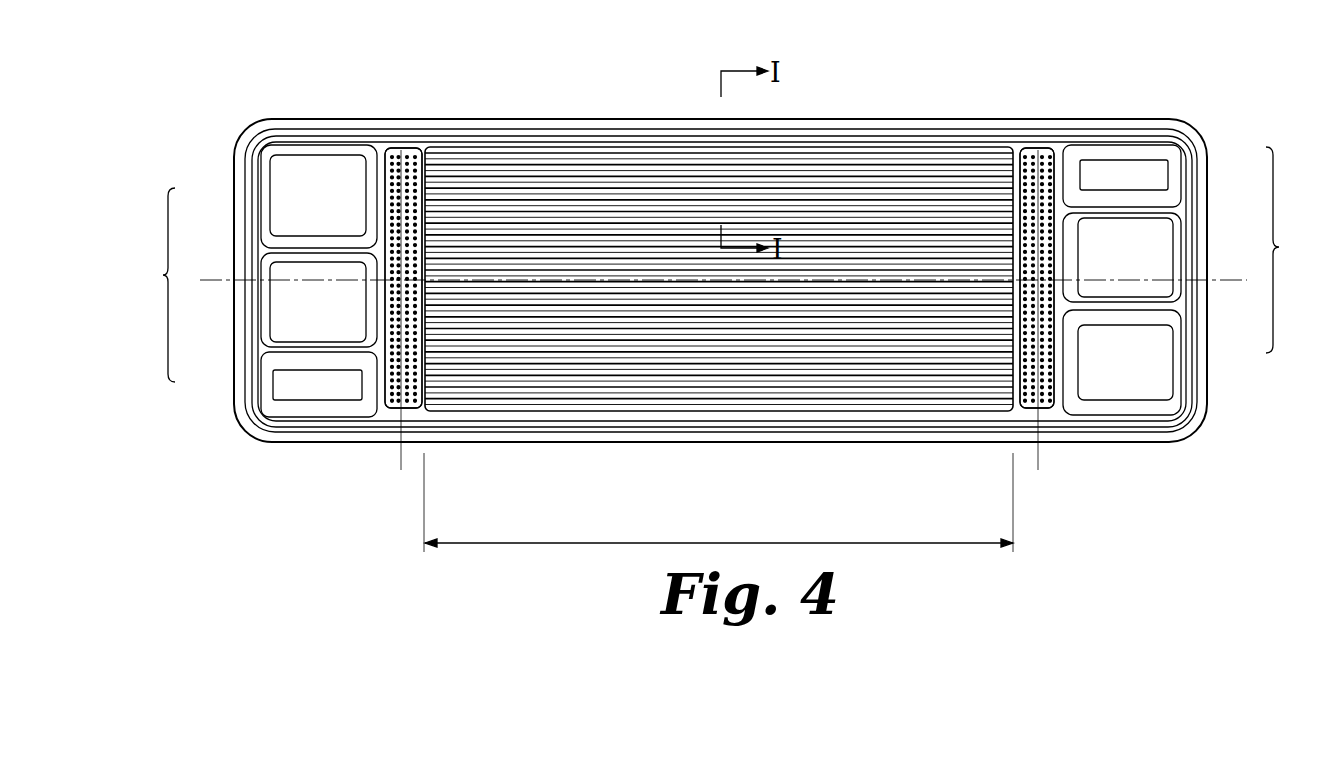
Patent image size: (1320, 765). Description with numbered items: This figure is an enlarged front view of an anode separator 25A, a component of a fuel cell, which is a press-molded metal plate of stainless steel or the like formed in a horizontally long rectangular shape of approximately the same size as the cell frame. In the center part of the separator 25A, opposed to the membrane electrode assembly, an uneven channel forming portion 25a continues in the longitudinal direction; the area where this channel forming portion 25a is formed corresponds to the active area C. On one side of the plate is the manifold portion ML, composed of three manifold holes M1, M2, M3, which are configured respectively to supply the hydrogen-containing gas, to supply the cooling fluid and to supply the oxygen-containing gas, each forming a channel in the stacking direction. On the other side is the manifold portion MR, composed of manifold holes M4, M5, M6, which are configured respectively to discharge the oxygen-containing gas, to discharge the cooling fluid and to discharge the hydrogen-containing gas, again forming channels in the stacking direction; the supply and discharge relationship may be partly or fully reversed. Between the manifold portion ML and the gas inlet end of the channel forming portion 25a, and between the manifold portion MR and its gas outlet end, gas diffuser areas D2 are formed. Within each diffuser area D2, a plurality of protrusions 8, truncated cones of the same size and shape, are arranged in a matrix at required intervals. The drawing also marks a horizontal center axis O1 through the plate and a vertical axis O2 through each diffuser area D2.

The anode separator 25A is at (258, 122).
The channel forming portion 25a is at (572, 172).
The protrusions 8 is at (414, 152).
The gas diffuser area D2 is at (392, 152).
The axis of protrusion row O2 is at (401, 150).
The center axis O1 is at (1220, 281).
The manifold hole M1 is at (272, 208).
The manifold hole M2 is at (272, 305).
The manifold hole M3 is at (273, 378).
The manifold hole M4 is at (1167, 176).
The manifold hole M5 is at (1172, 262).
The manifold hole M6 is at (1172, 347).
The manifold portion ML is at (153, 285).
The manifold portion MR is at (1293, 250).
The active area C is at (718, 502).